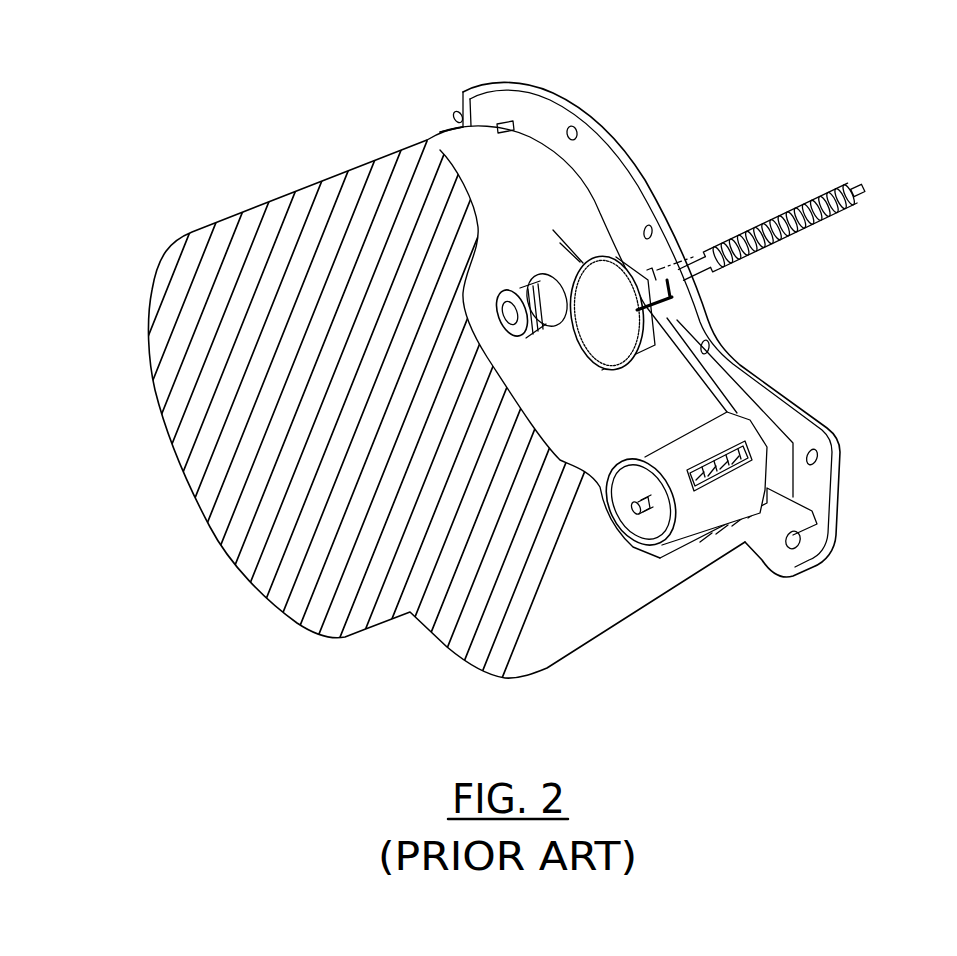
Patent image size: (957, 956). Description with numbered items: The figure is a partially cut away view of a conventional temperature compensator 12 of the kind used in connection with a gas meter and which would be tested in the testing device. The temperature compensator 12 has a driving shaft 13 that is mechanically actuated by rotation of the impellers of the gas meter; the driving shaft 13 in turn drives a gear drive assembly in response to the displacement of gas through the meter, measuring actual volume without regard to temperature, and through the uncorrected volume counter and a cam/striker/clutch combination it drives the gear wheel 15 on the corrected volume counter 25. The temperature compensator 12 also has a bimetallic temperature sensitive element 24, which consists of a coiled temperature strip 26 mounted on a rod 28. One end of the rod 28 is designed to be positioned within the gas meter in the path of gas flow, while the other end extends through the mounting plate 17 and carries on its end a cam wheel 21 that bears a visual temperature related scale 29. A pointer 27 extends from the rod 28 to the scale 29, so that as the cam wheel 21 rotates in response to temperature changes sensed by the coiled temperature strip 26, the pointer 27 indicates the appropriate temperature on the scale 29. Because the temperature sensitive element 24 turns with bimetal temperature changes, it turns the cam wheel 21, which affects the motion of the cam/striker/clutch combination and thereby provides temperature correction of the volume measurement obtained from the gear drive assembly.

The temperature compensator 12 is at (175, 125).
The driving shaft 13 is at (509, 290).
The gear wheel 15 is at (619, 462).
The mounting plate 17 is at (607, 132).
The cam wheel 21 is at (650, 275).
The bimetallic temperature sensitive element 24 is at (813, 166).
The corrected volume counter 25 is at (730, 427).
The coiled temperature strip 26 is at (820, 217).
The pointer 27 is at (673, 310).
The rod 28 is at (866, 180).
The visual temperature related scale 29 is at (597, 356).